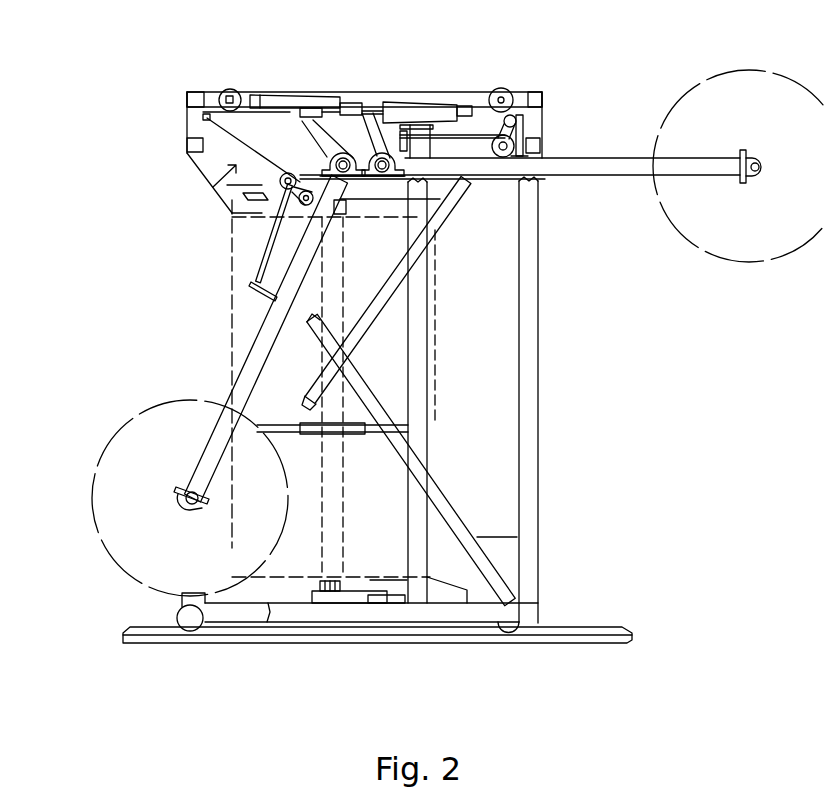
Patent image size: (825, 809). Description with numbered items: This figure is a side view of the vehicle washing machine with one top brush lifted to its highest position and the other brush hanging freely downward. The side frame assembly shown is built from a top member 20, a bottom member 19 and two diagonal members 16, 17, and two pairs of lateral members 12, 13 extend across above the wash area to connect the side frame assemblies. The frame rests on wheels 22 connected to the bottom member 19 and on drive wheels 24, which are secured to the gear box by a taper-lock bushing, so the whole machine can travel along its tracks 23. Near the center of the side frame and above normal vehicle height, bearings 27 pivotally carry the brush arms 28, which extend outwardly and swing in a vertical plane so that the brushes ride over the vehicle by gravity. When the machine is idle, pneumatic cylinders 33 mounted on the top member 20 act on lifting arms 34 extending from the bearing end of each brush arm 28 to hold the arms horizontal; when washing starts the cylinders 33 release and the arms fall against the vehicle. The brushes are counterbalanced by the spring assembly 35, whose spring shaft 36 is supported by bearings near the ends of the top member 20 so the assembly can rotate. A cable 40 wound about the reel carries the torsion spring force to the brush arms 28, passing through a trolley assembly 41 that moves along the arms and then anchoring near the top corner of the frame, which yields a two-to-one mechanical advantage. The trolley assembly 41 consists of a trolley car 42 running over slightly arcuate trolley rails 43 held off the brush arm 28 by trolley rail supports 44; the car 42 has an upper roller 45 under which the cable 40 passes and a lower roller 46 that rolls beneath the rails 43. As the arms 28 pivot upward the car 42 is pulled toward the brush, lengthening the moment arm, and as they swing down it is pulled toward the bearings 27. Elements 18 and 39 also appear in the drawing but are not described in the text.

The lateral member 12 is at (193, 100).
The lateral member 13 is at (195, 145).
The diagonal member 16 is at (455, 523).
The diagonal member 17 is at (320, 394).
The upright frame 18 is at (525, 382).
The bottom member 19 is at (343, 610).
The top member 20 is at (372, 99).
The wheels 22 is at (190, 622).
The tracks 23 is at (565, 637).
The drive wheels 24 is at (505, 626).
The bearings 27 is at (400, 116).
The brush arms 28 is at (593, 160).
The pneumatic cylinders 33 is at (438, 110).
The lifting arms 34 is at (323, 143).
The spring assembly 35 is at (215, 178).
The spring shaft 36 is at (502, 100).
The pulley 39 is at (230, 100).
The cable 40 is at (195, 100).
The trolley assembly 41 is at (252, 244).
The trolley car 42 is at (230, 213).
The trolley rails 43 is at (262, 270).
The trolley rail supports 44 is at (258, 293).
The upper roller 45 is at (289, 173).
The lower roller 46 is at (305, 191).